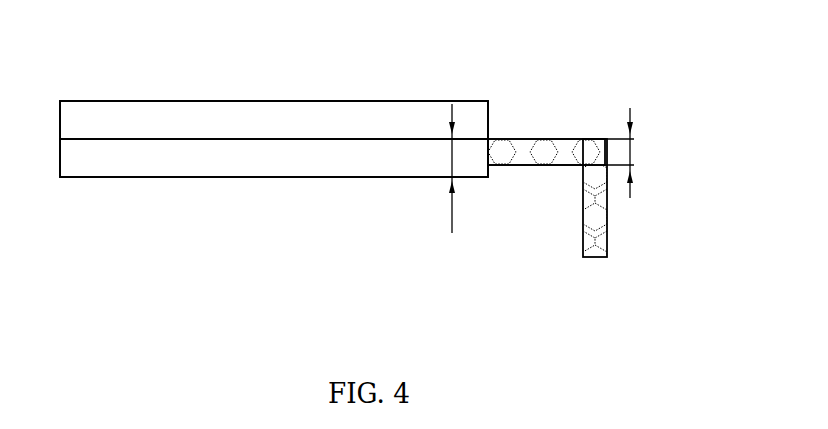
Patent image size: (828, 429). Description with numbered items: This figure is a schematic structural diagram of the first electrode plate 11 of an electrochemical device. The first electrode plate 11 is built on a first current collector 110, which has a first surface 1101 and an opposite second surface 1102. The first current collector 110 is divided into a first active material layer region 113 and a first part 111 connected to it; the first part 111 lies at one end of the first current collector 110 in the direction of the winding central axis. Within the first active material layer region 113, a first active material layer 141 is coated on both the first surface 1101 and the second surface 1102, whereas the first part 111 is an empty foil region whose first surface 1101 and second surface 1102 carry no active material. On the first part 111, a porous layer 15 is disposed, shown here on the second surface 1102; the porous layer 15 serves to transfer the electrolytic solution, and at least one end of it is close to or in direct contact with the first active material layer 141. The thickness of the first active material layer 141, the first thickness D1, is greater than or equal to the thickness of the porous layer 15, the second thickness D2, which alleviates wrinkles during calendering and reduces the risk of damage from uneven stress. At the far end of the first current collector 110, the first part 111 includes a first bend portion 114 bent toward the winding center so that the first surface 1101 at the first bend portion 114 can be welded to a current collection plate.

The first electrode plate 11 is at (460, 56).
The first current collector 110 is at (131, 140).
The first active material layer region 113 is at (218, 108).
The first active material layer 141 is at (357, 162).
The first part 111 is at (512, 157).
The first surface 1101 is at (596, 136).
The second surface 1102 is at (514, 153).
The porous layer 15 is at (546, 145).
The first bend portion 114 is at (608, 218).
The first thickness D1 is at (436, 168).
The second thickness D2 is at (644, 153).